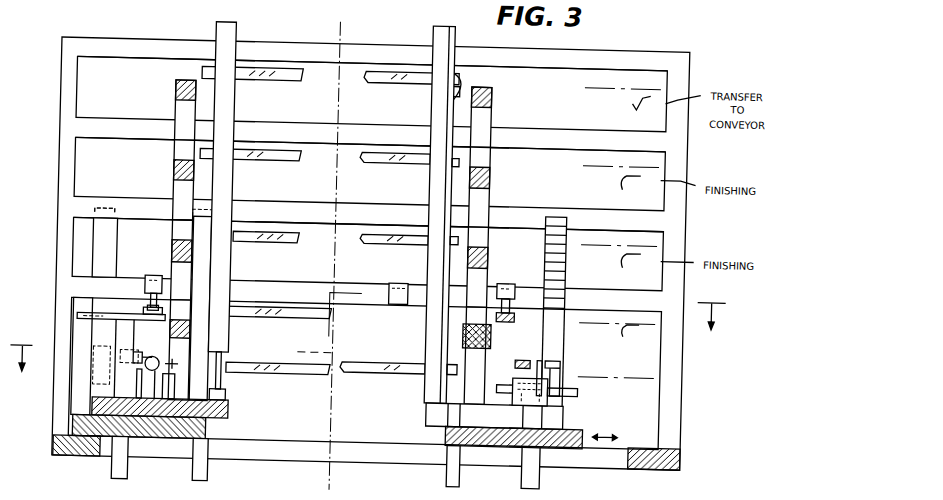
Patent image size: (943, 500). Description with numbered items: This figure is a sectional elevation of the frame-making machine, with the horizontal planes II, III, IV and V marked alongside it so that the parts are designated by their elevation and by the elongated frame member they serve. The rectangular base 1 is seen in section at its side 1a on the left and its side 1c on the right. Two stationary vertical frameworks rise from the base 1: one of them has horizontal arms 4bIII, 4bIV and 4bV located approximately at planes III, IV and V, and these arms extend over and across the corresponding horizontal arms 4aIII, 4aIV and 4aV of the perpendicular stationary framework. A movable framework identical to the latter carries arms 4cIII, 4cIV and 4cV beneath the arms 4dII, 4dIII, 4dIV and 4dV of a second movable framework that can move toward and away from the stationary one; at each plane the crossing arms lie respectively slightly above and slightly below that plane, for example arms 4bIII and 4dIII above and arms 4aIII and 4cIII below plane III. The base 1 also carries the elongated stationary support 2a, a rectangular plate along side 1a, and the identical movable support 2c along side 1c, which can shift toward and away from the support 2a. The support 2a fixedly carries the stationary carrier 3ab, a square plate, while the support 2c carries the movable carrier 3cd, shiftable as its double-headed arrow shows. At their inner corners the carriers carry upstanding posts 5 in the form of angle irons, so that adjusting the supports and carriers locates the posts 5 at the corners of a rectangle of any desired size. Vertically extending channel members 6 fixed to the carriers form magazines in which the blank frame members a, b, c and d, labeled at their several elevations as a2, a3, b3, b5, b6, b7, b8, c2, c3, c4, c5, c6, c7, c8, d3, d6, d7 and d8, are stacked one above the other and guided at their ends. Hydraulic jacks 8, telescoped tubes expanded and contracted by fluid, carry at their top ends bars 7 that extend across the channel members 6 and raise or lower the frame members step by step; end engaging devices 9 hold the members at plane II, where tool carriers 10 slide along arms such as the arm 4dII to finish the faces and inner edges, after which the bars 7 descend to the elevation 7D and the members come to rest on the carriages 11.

The rectangular base 1 is at (661, 363).
The side of base 1a is at (90, 458).
The side of base 1c is at (666, 455).
The elongated stationary support 2a is at (215, 415).
The elongated movable support 2c is at (455, 424).
The stationary carrier 3ab is at (237, 405).
The movable carrier 3cd is at (605, 426).
The horizontal arm of stationary framework 4aV is at (174, 91).
The horizontal arm of stationary framework 4aIV is at (177, 175).
The horizontal arm of stationary framework 4aIII is at (177, 254).
The horizontal arm of stationary framework 4bV is at (372, 60).
The horizontal arm of stationary framework 4bIV is at (371, 138).
The horizontal arm of stationary framework 4bIII is at (366, 306).
The carrier block station V 4cV is at (494, 87).
The carrier block station IV 4cIV is at (494, 170).
The horizontal arm of movable framework 4cIII is at (494, 249).
The compartment station V 4dV is at (372, 89).
The compartment station IV 4dIV is at (369, 169).
The horizontal arm of movable framework 4dIII is at (368, 246).
The horizontal arm of movable framework 4dII is at (365, 363).
The upstanding post 5 is at (435, 379).
The channel member 6 is at (110, 236).
The elongated bar 7 is at (455, 395).
The lowered position of bar 7D is at (508, 382).
The hydraulic jack 8 is at (138, 450).
The end engaging device 9 is at (151, 281).
The tool carrier 10 is at (394, 276).
The carriage 11 is at (110, 387).
The plate a2 is at (120, 355).
The roller a3 is at (135, 369).
The bar b3 is at (277, 377).
The bar b5 is at (262, 320).
The bar b6 is at (265, 249).
The bar b7 is at (250, 167).
The bar b8 is at (252, 85).
The block c2 is at (514, 311).
The block c3 is at (523, 354).
The tab c4 is at (466, 360).
The block c5 is at (470, 323).
The tab c6 is at (452, 233).
The tab c7 is at (449, 159).
The hook c8 is at (450, 84).
The bar d3 is at (361, 343).
The bar d6 is at (393, 252).
The bar d7 is at (394, 172).
The bar d8 is at (411, 88).
The plane II is at (367, 348).
The plane III is at (631, 262).
The plane IV is at (631, 185).
The plane V is at (642, 102).